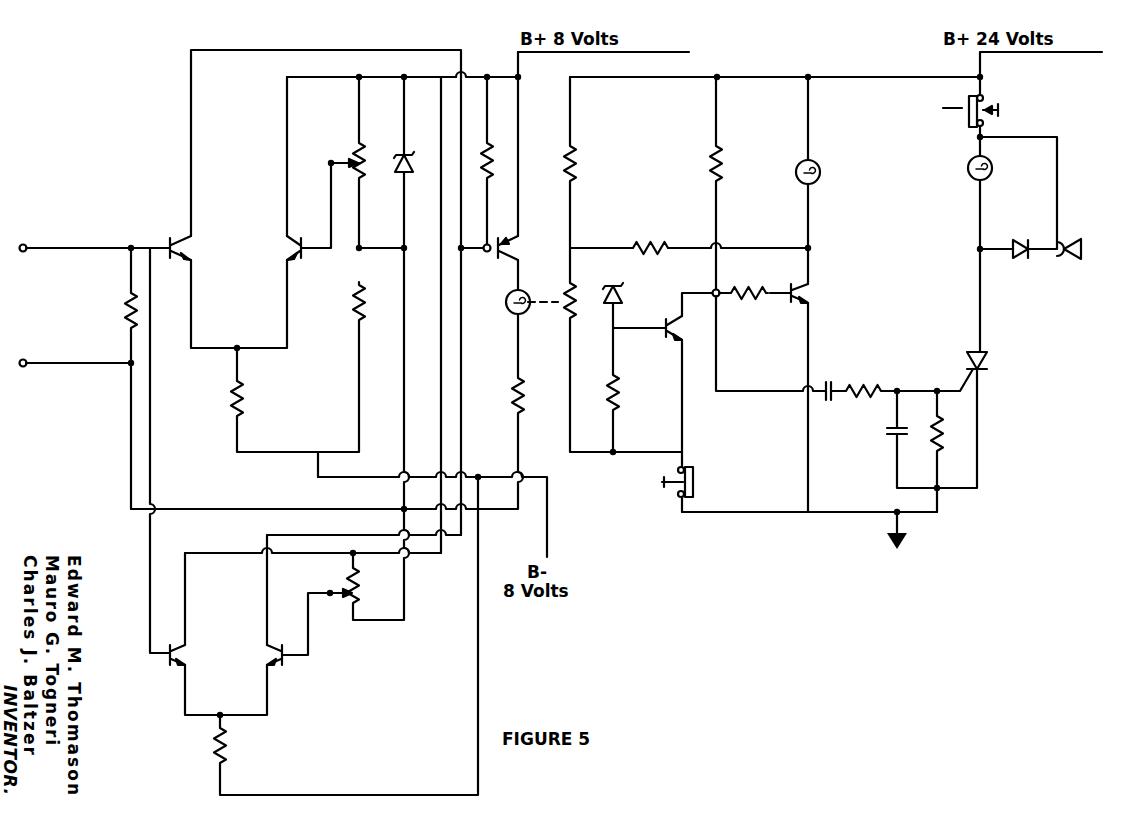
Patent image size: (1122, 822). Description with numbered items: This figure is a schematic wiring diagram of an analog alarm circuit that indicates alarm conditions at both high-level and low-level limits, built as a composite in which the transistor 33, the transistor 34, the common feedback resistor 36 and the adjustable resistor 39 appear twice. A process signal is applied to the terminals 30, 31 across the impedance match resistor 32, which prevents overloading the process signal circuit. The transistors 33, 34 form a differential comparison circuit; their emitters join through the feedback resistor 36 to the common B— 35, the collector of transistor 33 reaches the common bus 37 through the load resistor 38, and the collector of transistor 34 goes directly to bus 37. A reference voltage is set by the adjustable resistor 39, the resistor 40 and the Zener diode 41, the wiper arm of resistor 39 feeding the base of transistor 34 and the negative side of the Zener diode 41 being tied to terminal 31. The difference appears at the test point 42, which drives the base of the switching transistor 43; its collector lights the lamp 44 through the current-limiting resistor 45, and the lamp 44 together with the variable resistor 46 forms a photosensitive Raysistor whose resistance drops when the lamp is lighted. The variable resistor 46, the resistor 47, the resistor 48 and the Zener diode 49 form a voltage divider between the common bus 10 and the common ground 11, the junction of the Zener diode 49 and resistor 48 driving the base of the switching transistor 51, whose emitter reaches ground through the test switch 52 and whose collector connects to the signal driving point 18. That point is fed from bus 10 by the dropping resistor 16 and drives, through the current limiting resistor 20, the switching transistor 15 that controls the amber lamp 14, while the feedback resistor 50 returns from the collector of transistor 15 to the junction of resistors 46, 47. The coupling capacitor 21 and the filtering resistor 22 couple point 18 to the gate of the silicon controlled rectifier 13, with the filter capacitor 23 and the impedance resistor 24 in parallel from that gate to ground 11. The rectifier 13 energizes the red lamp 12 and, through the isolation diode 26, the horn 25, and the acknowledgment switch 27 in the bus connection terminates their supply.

The common bus 10 is at (873, 75).
The common ground 11 is at (757, 513).
The incandescent lamp 12 is at (991, 152).
The silicon controlled rectifier 13 is at (990, 353).
The lamp 14 is at (823, 153).
The switching transistor 15 is at (811, 291).
The dropping resistor 16 is at (720, 171).
The signal driving point 18 is at (720, 290).
The current limiting resistor 20 is at (757, 288).
The coupling capacitor 21 is at (832, 378).
The filtering resistor 22 is at (869, 379).
The filter capacitor 23 is at (885, 432).
The impedance resistor 24 is at (966, 440).
The horn 25 is at (1070, 238).
The isolation diode 26 is at (1018, 238).
The acknowledgment switch 27 is at (991, 108).
The terminal 30 is at (28, 243).
The terminal 31 is at (28, 358).
The impedance match resistor 32 is at (124, 300).
The transistor 33 is at (169, 236).
The transistor 34 is at (299, 238).
The common B— 35 is at (337, 450).
The common feedback resistor 36 is at (246, 392).
The common bus 37 is at (507, 76).
The load resistor 38 is at (489, 167).
The adjustable resistor 39 is at (365, 152).
The resistor 40 is at (348, 305).
The Zener diode 41 is at (412, 152).
The test point 42 is at (489, 243).
The switching transistor 43 is at (511, 248).
The lamp 44 is at (528, 295).
The current-limiting resistor 45 is at (505, 397).
The variable resistor 46 is at (603, 293).
The resistor 47 is at (578, 169).
The resistor 48 is at (625, 404).
The Zener diode 49 is at (625, 293).
The feedback resistor 50 is at (650, 244).
The switching transistor 51 is at (673, 341).
The test switch 52 is at (657, 482).